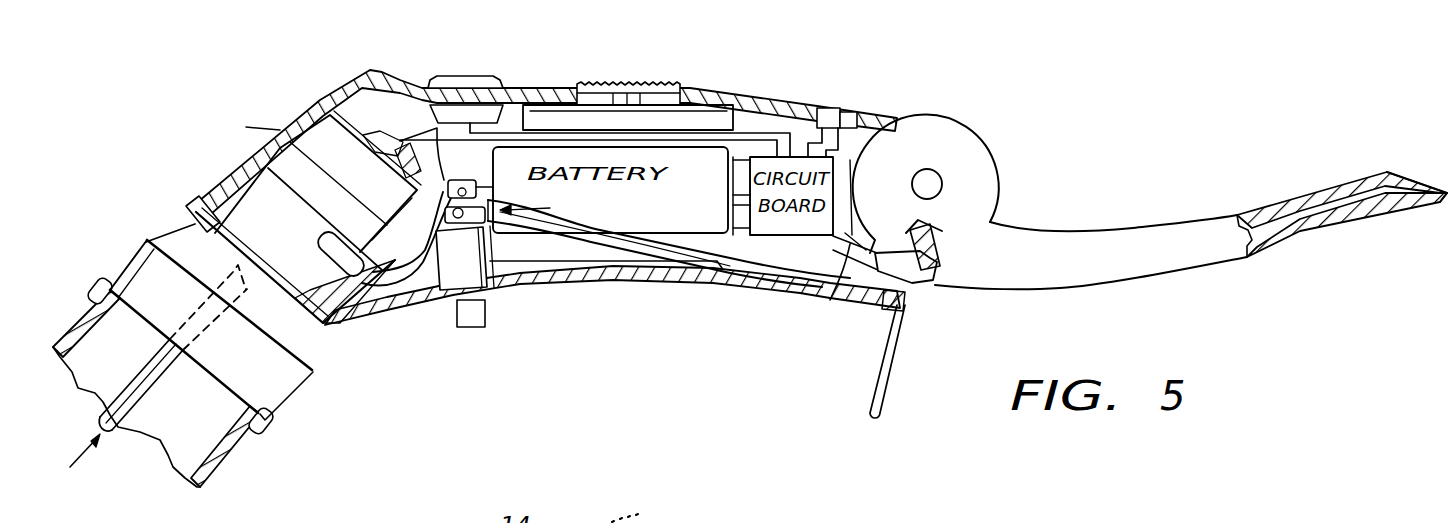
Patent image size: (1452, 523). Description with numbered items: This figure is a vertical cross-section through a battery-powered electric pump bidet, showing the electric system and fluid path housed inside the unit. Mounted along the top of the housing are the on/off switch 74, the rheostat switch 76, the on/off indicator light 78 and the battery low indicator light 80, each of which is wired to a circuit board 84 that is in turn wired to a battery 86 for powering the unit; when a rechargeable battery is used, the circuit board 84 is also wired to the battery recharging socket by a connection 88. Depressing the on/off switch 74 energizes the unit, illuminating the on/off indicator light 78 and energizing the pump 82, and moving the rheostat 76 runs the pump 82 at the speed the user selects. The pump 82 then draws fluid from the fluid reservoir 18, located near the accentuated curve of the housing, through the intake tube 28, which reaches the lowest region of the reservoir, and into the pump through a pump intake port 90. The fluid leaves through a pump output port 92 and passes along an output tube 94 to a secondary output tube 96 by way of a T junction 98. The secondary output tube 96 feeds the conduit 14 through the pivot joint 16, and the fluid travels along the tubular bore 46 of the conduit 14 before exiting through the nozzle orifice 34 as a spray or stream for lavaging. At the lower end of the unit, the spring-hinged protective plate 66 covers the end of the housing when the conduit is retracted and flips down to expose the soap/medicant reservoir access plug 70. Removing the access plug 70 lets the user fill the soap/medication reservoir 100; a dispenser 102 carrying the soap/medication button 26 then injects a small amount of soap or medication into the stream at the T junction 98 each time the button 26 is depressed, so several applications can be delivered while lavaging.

The conduit 14 is at (1127, 230).
The pivot joint 16 is at (1040, 144).
The fluid reservoir 18 is at (232, 460).
The soap/medication button 26 is at (470, 327).
The intake tube 28 is at (143, 413).
The nozzle orifice 34 is at (1428, 178).
The tubular bore 46 is at (1277, 227).
The protective plate 66 is at (882, 401).
The soap/medicant reservoir access plug 70 is at (930, 280).
The on/off switch 74 is at (467, 76).
The rheostat switch 76 is at (610, 80).
The on/off indicator light 78 is at (852, 110).
The battery low indicator light 80 is at (830, 107).
The pump 82 is at (356, 167).
The circuit board 84 is at (780, 225).
The battery 86 is at (598, 246).
The connection 88 is at (795, 280).
The pump intake port 90 is at (235, 287).
The pump output port 92 is at (360, 310).
The output tube 94 is at (413, 267).
The secondary output tube 96 is at (484, 178).
The T junction 98 is at (430, 142).
The soap/medication reservoir 100 is at (715, 264).
The dispenser 102 is at (468, 272).